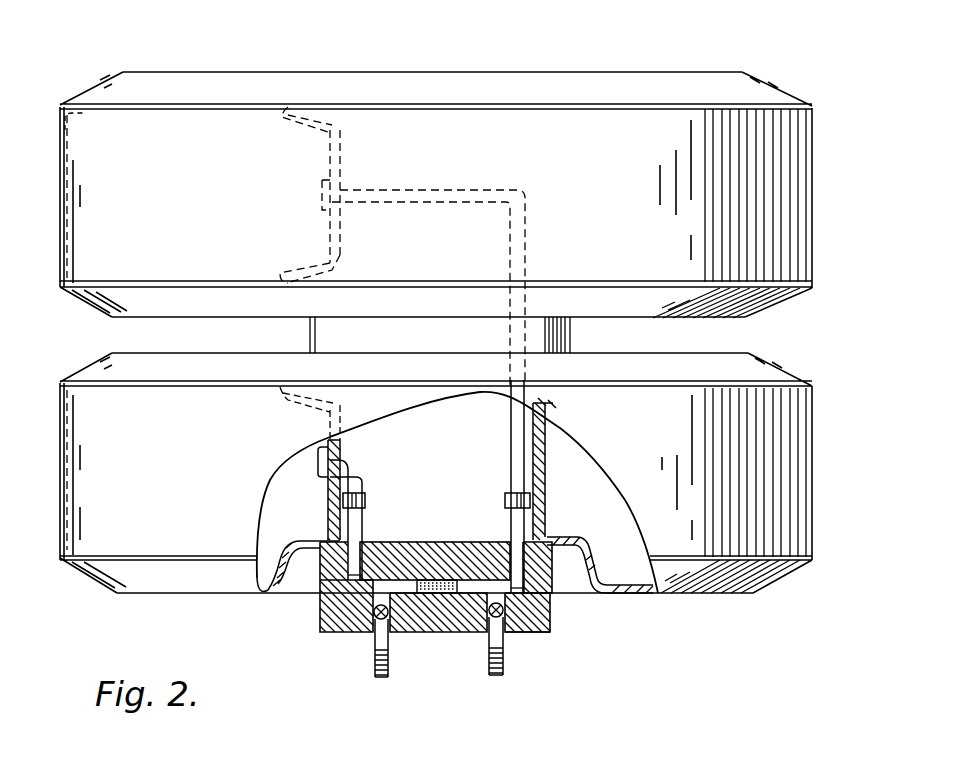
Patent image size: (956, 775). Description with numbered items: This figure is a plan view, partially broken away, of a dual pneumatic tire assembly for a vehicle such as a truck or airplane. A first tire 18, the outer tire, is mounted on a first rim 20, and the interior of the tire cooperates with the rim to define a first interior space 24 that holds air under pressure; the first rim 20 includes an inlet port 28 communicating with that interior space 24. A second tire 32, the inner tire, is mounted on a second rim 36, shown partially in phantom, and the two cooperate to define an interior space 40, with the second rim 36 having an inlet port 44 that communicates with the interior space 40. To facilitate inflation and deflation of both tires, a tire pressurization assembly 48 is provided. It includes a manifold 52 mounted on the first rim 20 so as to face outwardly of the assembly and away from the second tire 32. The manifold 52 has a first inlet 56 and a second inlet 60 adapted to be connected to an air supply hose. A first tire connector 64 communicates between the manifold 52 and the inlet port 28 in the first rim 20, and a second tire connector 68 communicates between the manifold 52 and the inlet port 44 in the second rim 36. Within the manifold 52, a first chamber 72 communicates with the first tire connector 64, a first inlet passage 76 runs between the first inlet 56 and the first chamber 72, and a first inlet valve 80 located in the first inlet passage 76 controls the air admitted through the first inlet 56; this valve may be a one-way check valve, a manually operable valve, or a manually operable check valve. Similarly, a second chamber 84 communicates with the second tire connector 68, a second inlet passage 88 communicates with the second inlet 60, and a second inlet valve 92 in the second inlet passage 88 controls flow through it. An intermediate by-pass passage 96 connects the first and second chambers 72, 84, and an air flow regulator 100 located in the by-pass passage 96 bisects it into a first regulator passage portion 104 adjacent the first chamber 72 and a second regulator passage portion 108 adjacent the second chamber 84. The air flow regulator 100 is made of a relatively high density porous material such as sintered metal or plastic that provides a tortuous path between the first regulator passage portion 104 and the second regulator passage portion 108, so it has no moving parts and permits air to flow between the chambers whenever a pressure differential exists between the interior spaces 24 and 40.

The first tire 18 is at (168, 473).
The first rim 20 is at (547, 447).
The first interior space 24 is at (306, 513).
The inlet port 28 is at (358, 442).
The second tire 32 is at (786, 143).
The second rim 36 is at (343, 138).
The interior space 40 is at (88, 95).
The inlet port 44 is at (342, 188).
The tire pressurization assembly 48 is at (436, 656).
The manifold 52 is at (550, 630).
The first inlet 56 is at (325, 653).
The second inlet 60 is at (460, 664).
The first tire connector 64 is at (362, 480).
The second tire connector 68 is at (510, 427).
The first chamber 72 is at (372, 551).
The first inlet passage 76 is at (380, 630).
The first inlet valve 80 is at (373, 620).
The second chamber 84 is at (513, 553).
The second inlet passage 88 is at (490, 648).
The second inlet valve 92 is at (520, 633).
The by-pass passage 96 is at (388, 585).
The air flow regulator 100 is at (437, 593).
The first regulator passage portion 104 is at (358, 583).
The second regulator passage portion 108 is at (553, 594).